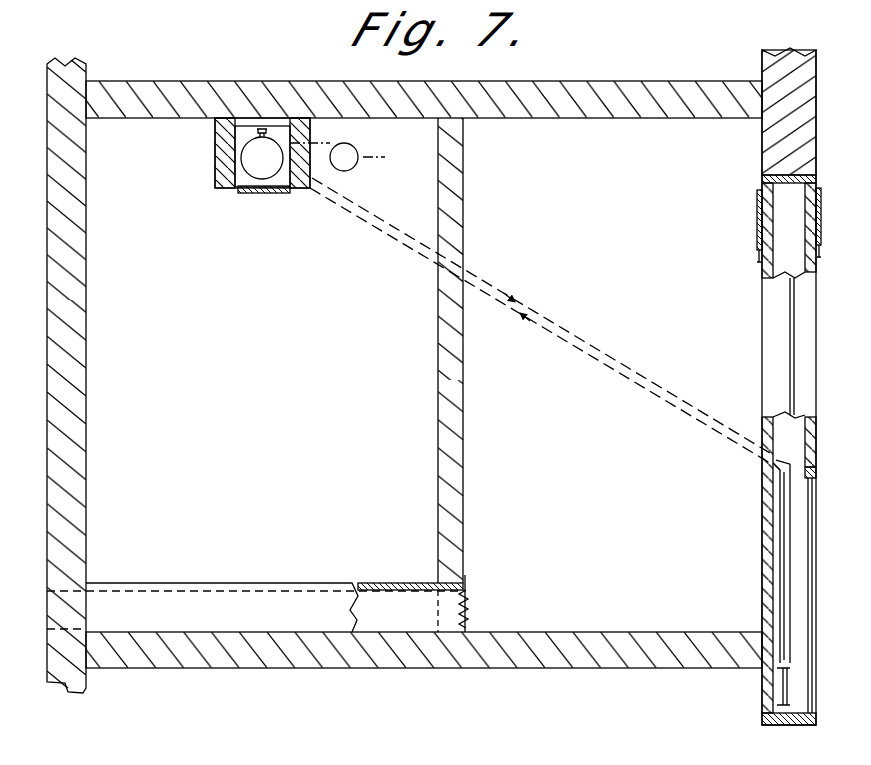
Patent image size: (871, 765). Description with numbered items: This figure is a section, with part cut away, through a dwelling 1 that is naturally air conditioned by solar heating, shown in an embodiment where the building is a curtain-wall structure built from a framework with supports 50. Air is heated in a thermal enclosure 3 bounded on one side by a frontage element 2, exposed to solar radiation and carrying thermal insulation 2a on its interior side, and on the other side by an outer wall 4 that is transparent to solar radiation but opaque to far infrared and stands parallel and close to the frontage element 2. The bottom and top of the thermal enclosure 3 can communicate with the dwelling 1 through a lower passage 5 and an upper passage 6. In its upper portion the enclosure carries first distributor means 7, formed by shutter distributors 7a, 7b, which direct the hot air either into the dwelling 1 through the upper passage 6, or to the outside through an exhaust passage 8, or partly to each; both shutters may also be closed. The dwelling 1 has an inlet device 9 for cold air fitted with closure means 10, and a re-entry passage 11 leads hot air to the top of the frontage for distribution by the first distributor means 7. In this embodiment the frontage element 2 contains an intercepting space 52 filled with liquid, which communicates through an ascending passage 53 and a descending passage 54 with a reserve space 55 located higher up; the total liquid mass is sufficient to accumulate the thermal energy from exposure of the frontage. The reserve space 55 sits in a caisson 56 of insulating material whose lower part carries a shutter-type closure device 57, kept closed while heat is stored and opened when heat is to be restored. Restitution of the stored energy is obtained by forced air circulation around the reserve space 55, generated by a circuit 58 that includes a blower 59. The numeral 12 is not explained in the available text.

The dwelling 1 is at (275, 349).
The frontage element 2 is at (792, 537).
The thermal insulation 2a is at (762, 505).
The thermal enclosure 3 is at (797, 641).
The outer wall 4 is at (809, 581).
The lower passage 5 is at (768, 612).
The upper passage 6 is at (765, 186).
The first distributor means 7 is at (808, 238).
The shutter distributor 7a is at (757, 213).
The shutter distributor 7b is at (818, 200).
The exhaust passage 8 is at (806, 190).
The inlet device 9 is at (65, 612).
The closure means 10 is at (467, 603).
The re-entry passage 11 is at (800, 461).
The strip 12 is at (790, 340).
The support 50 is at (782, 690).
The intercepting space 52 is at (782, 540).
The ascending passage 53 is at (700, 421).
The descending passage 54 is at (707, 425).
The reserve space 55 is at (241, 186).
The caisson 56 is at (215, 152).
The closure device 57 is at (266, 193).
The circuit 58 is at (328, 142).
The blower 59 is at (349, 159).